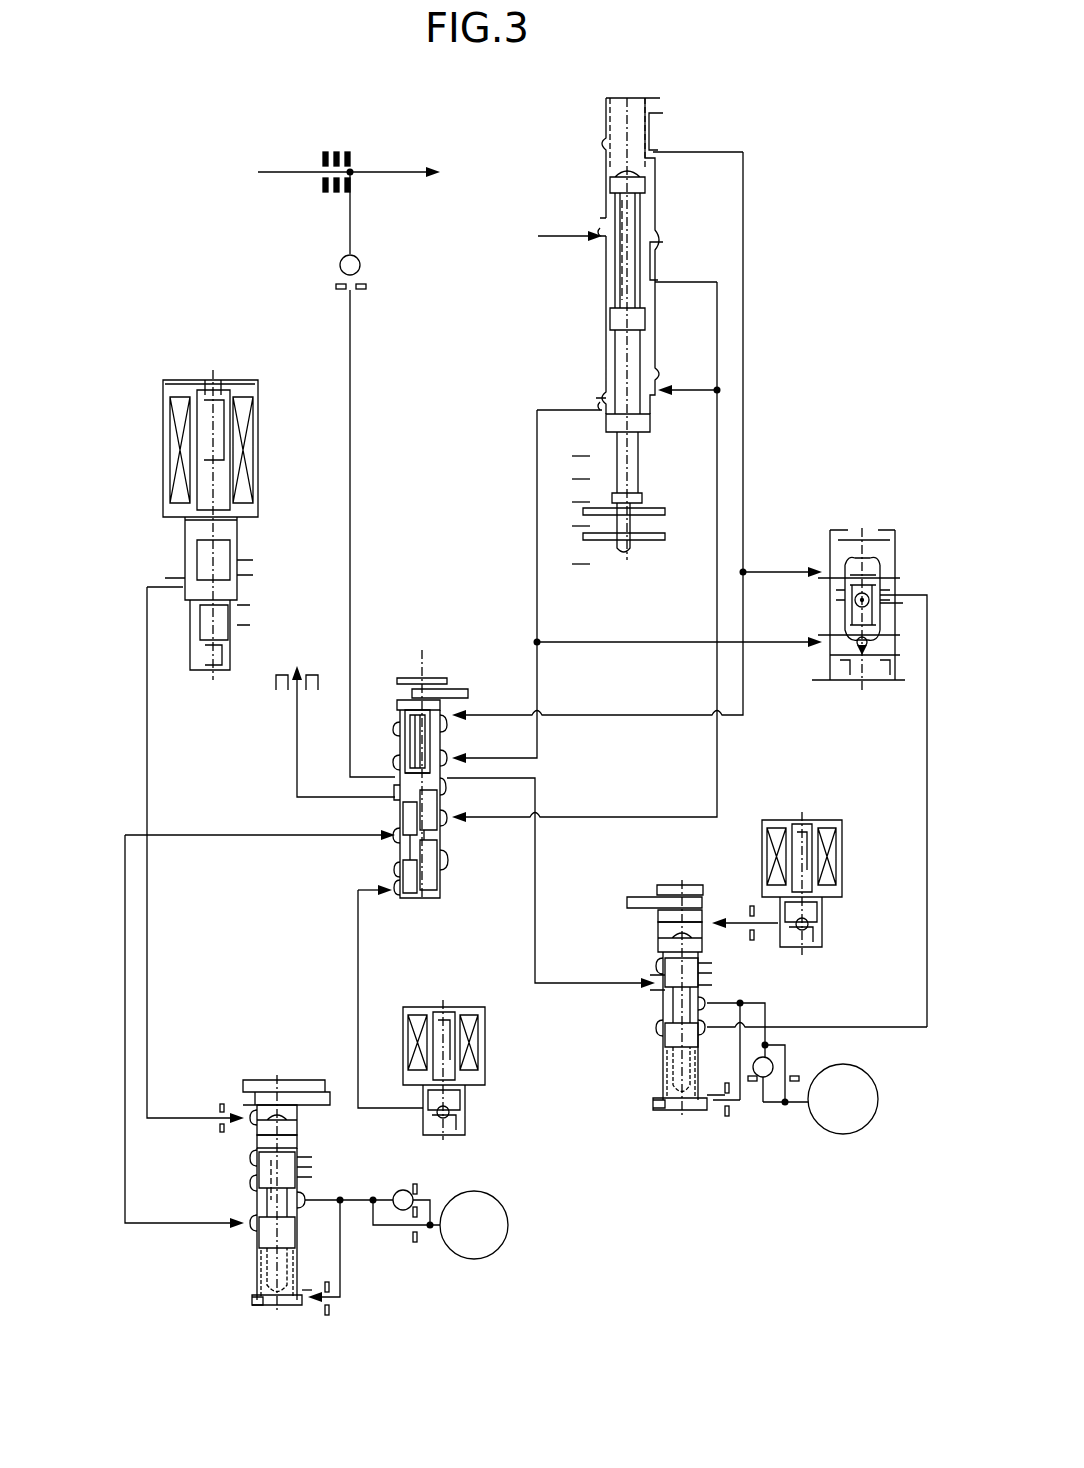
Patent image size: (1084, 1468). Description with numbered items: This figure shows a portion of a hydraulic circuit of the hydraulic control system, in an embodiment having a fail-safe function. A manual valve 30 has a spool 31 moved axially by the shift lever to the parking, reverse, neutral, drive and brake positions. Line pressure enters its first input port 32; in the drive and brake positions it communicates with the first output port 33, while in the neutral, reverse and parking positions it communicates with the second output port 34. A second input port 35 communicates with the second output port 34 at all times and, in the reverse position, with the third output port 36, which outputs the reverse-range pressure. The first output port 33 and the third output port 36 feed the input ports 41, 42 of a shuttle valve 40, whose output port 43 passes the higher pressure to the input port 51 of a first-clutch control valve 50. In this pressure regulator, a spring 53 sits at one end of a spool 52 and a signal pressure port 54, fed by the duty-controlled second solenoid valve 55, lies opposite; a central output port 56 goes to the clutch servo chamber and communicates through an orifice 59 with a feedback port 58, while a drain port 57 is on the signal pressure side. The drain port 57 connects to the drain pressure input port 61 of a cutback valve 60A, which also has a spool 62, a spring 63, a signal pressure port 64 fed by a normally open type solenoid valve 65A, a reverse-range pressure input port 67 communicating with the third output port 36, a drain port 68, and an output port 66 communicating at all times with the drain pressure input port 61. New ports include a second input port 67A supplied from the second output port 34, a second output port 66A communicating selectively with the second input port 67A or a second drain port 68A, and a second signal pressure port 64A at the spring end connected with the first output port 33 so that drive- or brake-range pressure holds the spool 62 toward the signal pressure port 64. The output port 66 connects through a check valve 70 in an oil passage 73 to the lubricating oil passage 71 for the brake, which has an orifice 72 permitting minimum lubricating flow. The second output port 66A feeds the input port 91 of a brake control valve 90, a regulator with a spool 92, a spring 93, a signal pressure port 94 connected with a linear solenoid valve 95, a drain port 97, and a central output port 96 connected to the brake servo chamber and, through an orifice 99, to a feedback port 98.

The manual valve 30 is at (580, 158).
The spool 31 is at (638, 212).
The first input port 32 is at (604, 242).
The first output port 33 is at (650, 145).
The second output port 34 is at (648, 276).
The second input port 35 is at (655, 386).
The third output port 36 is at (600, 404).
The shuttle valve 40 is at (908, 515).
The input port 41 is at (824, 568).
The input port 42 is at (820, 650).
The output port 43 is at (896, 600).
The C1 control valve 50 is at (615, 882).
The input port 51 is at (707, 1030).
The spool 52 is at (668, 1040).
The spring 53 is at (660, 1100).
The signal pressure port 54 is at (705, 922).
The second solenoid valve 55 is at (843, 878).
The output port 56 is at (707, 1003).
The drain port 57 is at (660, 978).
The feedback port 58 is at (708, 1105).
The orifice 59 is at (728, 1115).
The cutback valve 60A is at (432, 615).
The drain pressure input port 61 is at (445, 790).
The spool 62 is at (440, 862).
The spring 63 is at (403, 722).
The signal pressure port 64 is at (390, 893).
The second signal pressure port 64A is at (447, 712).
The normally open type solenoid valve 65A is at (484, 1047).
The output port 66 is at (396, 771).
The second output port 66A is at (395, 840).
The R-range pressure input port 67 is at (445, 760).
The second input port 67A is at (445, 826).
The drain port 68 is at (400, 800).
The second drain port 68A is at (395, 872).
The check valve 70 is at (366, 288).
The lubricating oil passage 71 is at (385, 172).
The orifice 72 is at (326, 188).
The oil passage 73 is at (352, 348).
The B1 control valve 90 is at (293, 1052).
The input port 91 is at (253, 1222).
The spool 92 is at (285, 1168).
The spring 93 is at (257, 1297).
The signal pressure port 94 is at (252, 1115).
The linear solenoid valve 95 is at (255, 450).
The output port 96 is at (308, 1203).
The drain port 97 is at (254, 1183).
The feedback port 98 is at (300, 1297).
The orifice 99 is at (330, 1300).